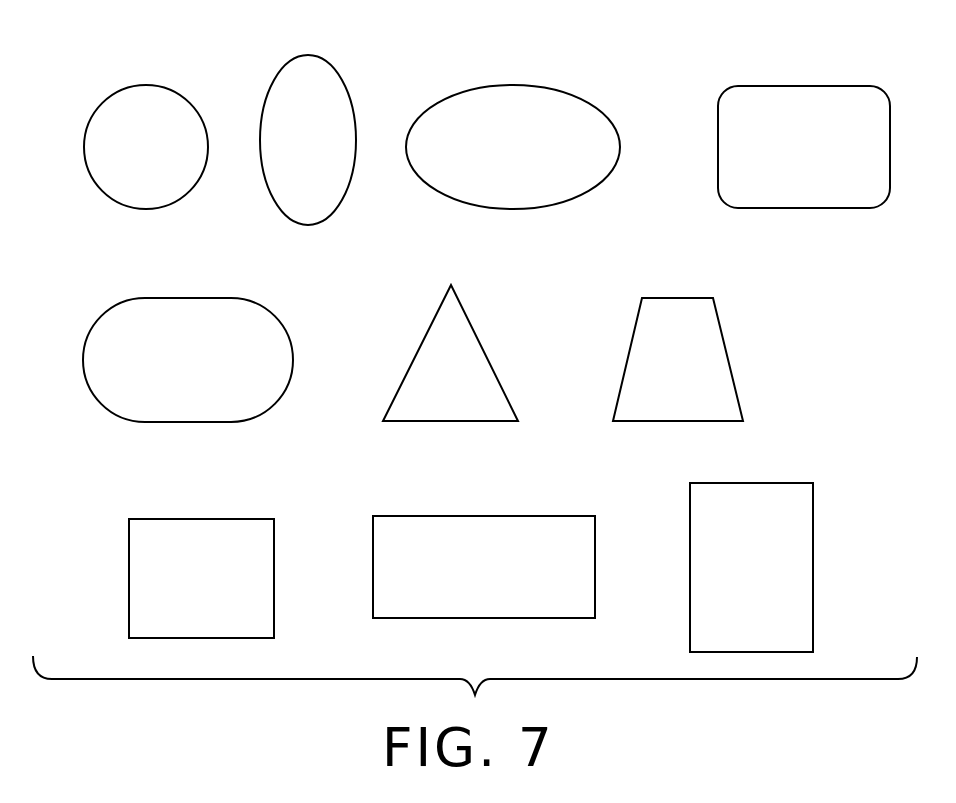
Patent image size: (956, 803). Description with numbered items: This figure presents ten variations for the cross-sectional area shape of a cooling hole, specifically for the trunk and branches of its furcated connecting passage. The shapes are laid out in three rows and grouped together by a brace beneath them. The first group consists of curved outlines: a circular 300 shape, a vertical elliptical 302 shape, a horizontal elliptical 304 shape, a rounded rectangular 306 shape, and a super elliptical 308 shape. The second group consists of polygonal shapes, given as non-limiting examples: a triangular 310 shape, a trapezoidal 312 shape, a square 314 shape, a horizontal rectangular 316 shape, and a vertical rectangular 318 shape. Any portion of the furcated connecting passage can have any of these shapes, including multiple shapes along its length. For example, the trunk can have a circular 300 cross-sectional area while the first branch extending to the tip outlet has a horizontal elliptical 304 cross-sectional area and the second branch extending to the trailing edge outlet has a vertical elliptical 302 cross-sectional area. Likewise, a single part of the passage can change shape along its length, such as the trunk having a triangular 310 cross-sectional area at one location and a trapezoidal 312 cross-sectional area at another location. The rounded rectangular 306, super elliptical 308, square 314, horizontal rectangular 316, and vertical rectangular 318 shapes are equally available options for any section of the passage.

The circular shape 300 is at (115, 92).
The vertical elliptical shape 302 is at (292, 56).
The horizontal elliptical shape 304 is at (493, 85).
The rounded rectangular shape 306 is at (770, 86).
The super elliptical shape 308 is at (158, 298).
The triangular shape 310 is at (442, 304).
The trapezoidal shape 312 is at (677, 298).
The square shape 314 is at (167, 519).
The horizontal rectangular shape 316 is at (408, 516).
The vertical rectangular shape 318 is at (720, 483).